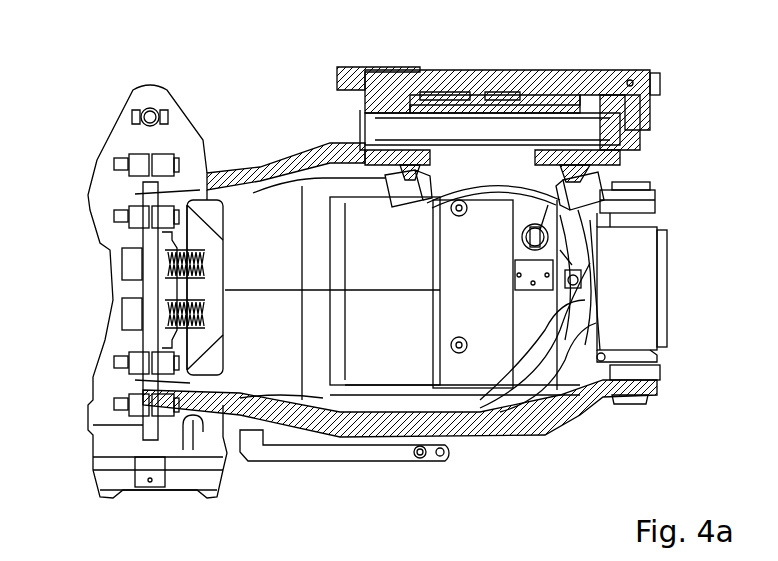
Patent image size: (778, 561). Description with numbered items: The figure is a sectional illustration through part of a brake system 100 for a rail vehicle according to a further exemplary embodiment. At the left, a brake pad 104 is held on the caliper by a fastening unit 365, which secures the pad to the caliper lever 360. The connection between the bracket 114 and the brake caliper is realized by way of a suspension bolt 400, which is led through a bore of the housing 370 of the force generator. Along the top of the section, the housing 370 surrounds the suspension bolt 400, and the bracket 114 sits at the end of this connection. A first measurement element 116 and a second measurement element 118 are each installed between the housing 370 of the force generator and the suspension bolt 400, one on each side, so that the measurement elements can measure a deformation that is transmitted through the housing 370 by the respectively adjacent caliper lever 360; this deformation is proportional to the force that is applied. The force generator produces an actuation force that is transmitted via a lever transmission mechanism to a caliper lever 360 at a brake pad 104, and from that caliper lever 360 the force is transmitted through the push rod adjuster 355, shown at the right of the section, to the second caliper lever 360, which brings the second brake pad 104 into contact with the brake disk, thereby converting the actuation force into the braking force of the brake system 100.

The brake system 100 is at (563, 455).
The brake pad 104 is at (118, 133).
The bracket 114 is at (590, 80).
The first measurement element 116 is at (388, 187).
The second measurement element 118 is at (592, 186).
The push rod adjuster 355 is at (635, 292).
The caliper lever 360 is at (650, 205).
The fastening unit for holding the brake pad 365 is at (140, 192).
The housing of the force generator 370 is at (617, 160).
The suspension bolt 400 is at (500, 122).